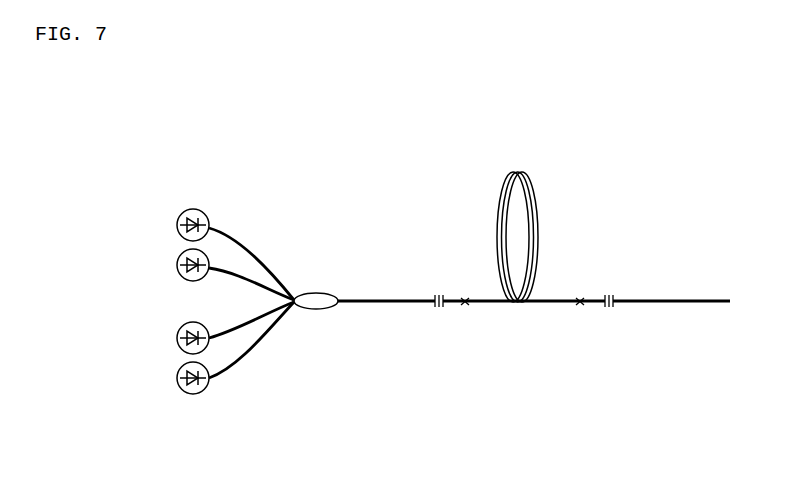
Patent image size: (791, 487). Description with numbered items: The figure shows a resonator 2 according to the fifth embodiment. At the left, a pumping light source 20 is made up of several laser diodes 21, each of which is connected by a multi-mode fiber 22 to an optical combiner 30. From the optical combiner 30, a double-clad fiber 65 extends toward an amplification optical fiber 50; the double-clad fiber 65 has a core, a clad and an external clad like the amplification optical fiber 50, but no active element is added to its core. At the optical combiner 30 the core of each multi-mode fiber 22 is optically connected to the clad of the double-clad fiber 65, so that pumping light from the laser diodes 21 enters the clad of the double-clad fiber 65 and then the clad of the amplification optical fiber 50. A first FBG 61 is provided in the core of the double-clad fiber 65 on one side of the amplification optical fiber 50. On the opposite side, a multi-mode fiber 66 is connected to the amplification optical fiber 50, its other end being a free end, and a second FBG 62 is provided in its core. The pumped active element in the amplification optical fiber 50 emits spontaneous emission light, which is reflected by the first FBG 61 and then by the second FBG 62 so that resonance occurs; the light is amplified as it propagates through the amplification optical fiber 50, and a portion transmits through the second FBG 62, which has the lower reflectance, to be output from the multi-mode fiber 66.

The resonator 2 is at (641, 148).
The pumping light source 20 is at (114, 262).
The laser diode 21 is at (180, 229).
The multi-mode fiber 22 is at (214, 232).
The optical combiner 30 is at (322, 303).
The amplification optical fiber 50 is at (538, 302).
The first FBG 61 is at (440, 309).
The second FBG 62 is at (610, 309).
The double-clad fiber 65 is at (366, 300).
The multi-mode fiber 66 is at (640, 300).